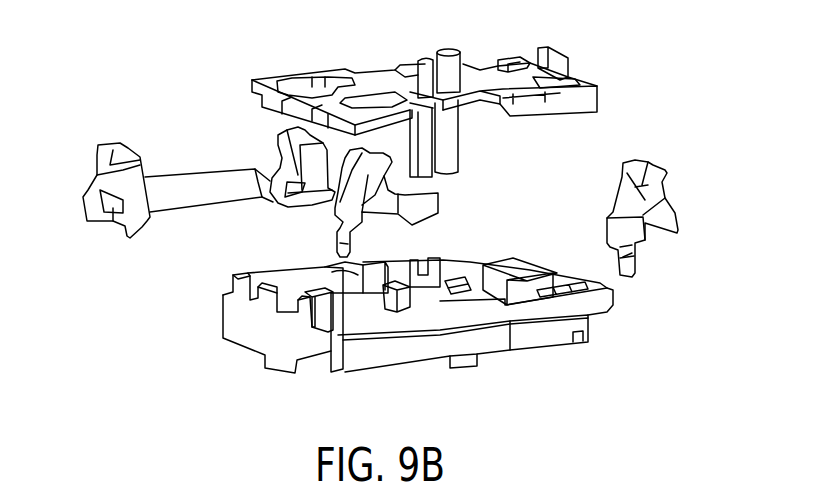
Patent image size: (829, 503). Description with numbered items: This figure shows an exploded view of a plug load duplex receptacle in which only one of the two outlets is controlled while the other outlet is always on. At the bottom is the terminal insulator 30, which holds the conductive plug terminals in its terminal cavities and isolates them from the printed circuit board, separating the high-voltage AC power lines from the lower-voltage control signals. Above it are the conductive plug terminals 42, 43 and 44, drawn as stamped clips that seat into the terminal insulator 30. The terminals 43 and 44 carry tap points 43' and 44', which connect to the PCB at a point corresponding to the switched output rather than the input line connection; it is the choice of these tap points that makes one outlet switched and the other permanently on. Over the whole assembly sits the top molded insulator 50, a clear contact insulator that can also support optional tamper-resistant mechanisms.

The terminal insulator 30 is at (528, 337).
The conductive plug terminal 42 is at (290, 152).
The conductive plug terminal 43 is at (371, 199).
The tap point 43' is at (659, 273).
The conductive plug terminal 44 is at (416, 202).
The tap point 44' is at (310, 232).
The top molded insulator 50 is at (356, 77).